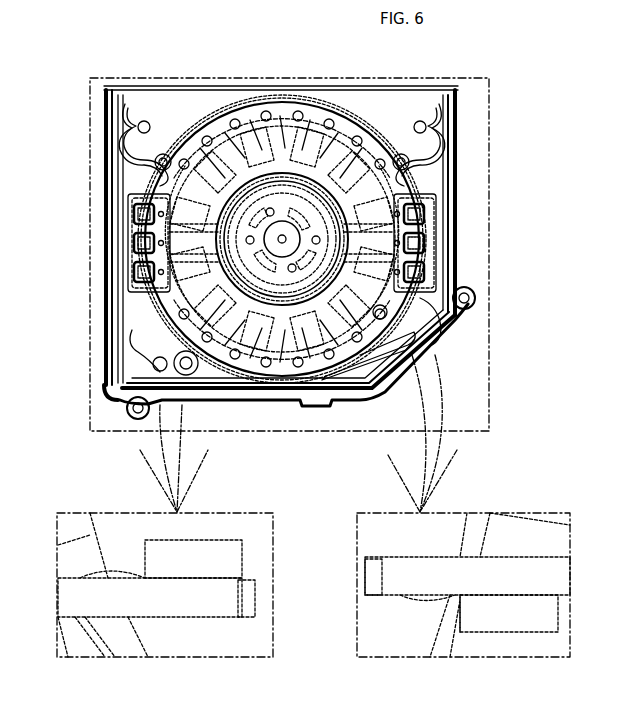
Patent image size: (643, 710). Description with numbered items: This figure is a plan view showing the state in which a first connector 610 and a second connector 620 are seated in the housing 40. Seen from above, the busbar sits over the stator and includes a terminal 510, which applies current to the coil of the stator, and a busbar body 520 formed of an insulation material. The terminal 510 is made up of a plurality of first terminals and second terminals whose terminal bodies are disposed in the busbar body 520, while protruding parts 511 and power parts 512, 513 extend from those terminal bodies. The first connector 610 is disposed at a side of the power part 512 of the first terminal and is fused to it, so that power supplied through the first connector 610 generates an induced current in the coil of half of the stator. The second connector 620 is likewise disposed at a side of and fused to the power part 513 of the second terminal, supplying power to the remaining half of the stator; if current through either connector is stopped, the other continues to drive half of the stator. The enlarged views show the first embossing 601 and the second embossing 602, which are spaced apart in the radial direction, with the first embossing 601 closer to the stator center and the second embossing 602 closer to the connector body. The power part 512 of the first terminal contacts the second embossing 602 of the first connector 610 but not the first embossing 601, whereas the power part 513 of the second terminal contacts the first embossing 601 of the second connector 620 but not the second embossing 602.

The housing 40 is at (457, 255).
The terminal 510 is at (276, 105).
The protruding part 511 is at (300, 102).
The power part of the first terminal 512 is at (478, 306).
The power part of the second terminal 513 is at (140, 310).
The busbar body 520 is at (242, 100).
The first connector 610 is at (436, 240).
The second connector 620 is at (114, 240).
The first embossing 601 is at (195, 580).
The second embossing 602 is at (115, 580).